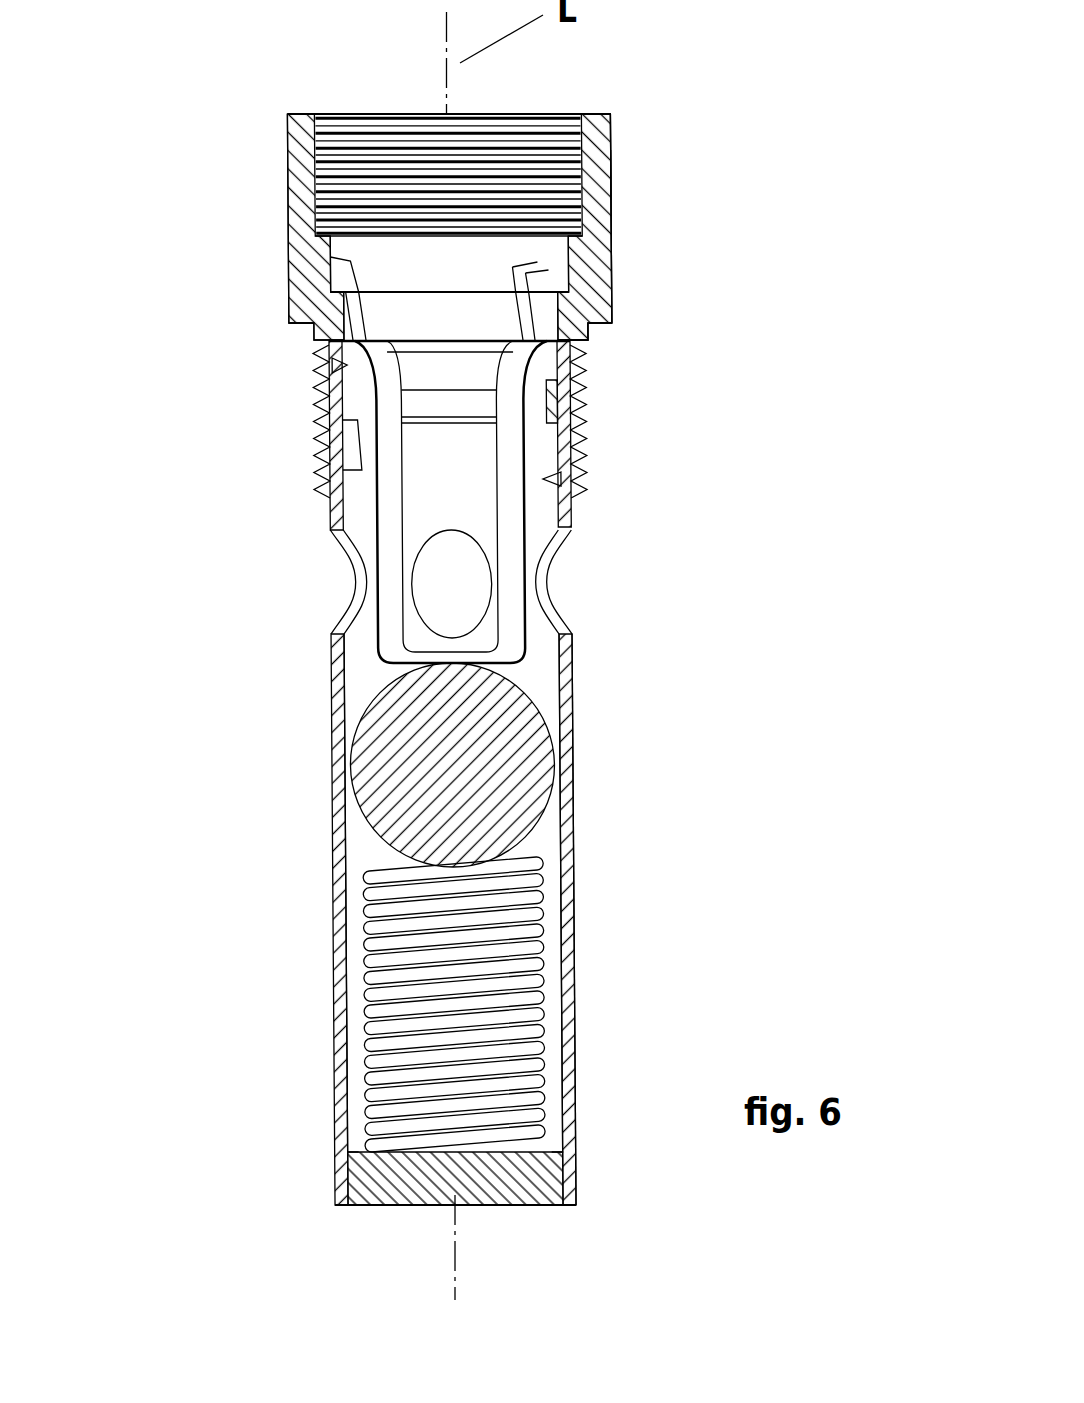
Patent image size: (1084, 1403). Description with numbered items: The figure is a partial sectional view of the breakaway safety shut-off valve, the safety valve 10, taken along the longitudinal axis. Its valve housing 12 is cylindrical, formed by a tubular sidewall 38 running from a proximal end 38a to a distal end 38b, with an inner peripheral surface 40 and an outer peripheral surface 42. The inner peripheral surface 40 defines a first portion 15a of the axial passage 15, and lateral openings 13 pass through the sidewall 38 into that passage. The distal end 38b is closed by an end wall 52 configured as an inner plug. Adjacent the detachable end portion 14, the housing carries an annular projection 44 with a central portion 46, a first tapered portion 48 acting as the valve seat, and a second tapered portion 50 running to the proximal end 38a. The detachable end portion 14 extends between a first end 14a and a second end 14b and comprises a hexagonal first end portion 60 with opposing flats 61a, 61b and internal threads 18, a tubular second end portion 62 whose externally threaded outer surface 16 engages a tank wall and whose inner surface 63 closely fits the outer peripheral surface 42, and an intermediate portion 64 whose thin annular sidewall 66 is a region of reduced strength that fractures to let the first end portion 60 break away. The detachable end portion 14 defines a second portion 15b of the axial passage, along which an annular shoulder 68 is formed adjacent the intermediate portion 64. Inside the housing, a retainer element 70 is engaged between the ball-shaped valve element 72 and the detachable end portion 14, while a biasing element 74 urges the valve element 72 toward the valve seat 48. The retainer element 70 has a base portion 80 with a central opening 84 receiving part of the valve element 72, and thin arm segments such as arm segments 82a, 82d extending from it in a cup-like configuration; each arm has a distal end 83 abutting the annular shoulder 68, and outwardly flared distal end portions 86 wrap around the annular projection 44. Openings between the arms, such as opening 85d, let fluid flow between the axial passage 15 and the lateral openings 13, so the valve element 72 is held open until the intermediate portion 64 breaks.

The safety valve 10 is at (515, 651).
The valve housing 12 is at (445, 962).
The lateral openings 13 is at (342, 548).
The detachable end portion 14 is at (383, 208).
The first end 14a is at (664, 193).
The second end 14b is at (634, 445).
The axial passage 15 is at (426, 123).
The first portion of the axial passage 15a is at (389, 685).
The second portion of the axial passage 15b is at (464, 277).
The externally threaded outer surface 16 is at (580, 448).
The internal threads 18 is at (514, 140).
The tubular sidewall 38 is at (576, 960).
The proximal end 38a is at (236, 304).
The distal end 38b is at (532, 1242).
The inner peripheral surface 40 is at (576, 846).
The outer peripheral surface 42 is at (576, 1033).
The annular projection 44 is at (587, 398).
The central portion 46 is at (316, 398).
The first tapered portion 48 is at (362, 470).
The second tapered portion 50 is at (330, 353).
The end wall 52 is at (378, 1221).
The first end portion 60 is at (662, 157).
The opposing flat 61a is at (207, 218).
The opposing flat 61b is at (611, 196).
The second end portion 62 is at (592, 460).
The inner surface 63 is at (575, 480).
The intermediate portion 64 is at (590, 350).
The annular sidewall 66 is at (565, 355).
The annular shoulder 68 is at (535, 283).
The retainer element 70 is at (372, 510).
The valve element 72 is at (284, 893).
The biasing element 74 is at (371, 1004).
The base portion 80 is at (513, 667).
The arm segment 82a is at (510, 617).
The arm segment 82d is at (405, 610).
The distal end 83 is at (346, 275).
The central opening 84 is at (440, 648).
The opening 85d is at (472, 474).
The distal end portions 86 is at (352, 342).